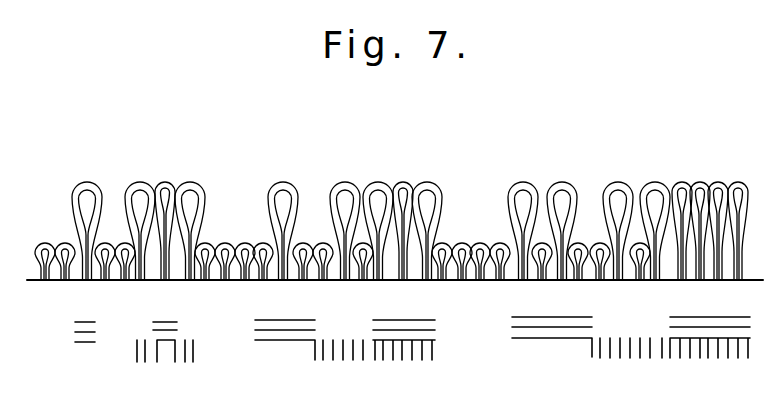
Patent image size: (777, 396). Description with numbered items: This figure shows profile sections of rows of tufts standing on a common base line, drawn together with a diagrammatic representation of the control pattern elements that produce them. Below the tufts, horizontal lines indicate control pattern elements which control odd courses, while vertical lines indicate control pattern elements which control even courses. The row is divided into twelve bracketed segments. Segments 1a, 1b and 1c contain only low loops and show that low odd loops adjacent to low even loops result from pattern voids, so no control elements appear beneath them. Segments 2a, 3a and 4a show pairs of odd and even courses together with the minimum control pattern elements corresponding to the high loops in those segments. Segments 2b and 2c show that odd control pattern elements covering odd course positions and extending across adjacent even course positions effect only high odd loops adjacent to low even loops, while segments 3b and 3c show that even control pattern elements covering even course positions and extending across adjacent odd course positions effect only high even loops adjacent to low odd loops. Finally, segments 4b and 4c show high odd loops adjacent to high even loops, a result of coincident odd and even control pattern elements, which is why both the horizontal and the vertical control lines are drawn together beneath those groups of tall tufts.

The segment 1a is at (70, 170).
The segment 2a is at (70, 170).
The segment 3a is at (157, 170).
The segment 4a is at (193, 170).
The segment 1b is at (193, 170).
The segment 2b is at (253, 170).
The segment 3b is at (312, 170).
The segment 4b is at (435, 170).
The segment 1c is at (435, 170).
The segment 2c is at (588, 170).
The segment 3c is at (668, 170).
The segment 4c is at (745, 170).